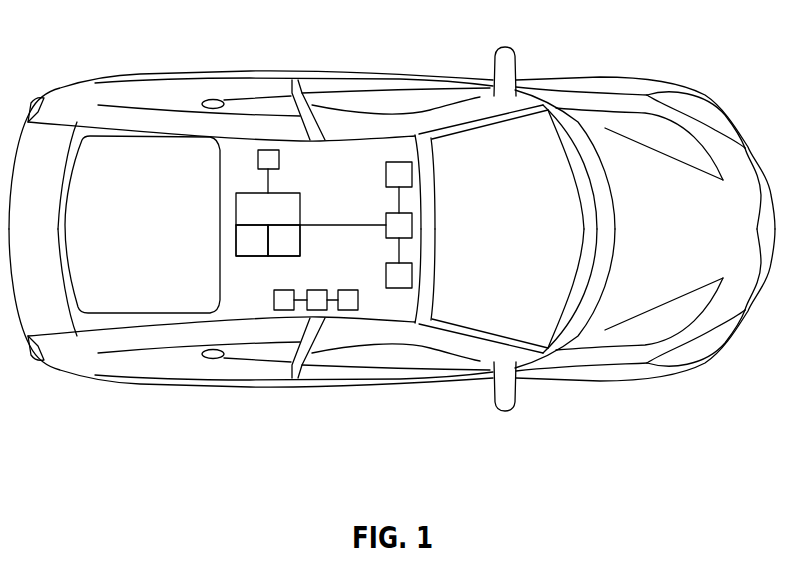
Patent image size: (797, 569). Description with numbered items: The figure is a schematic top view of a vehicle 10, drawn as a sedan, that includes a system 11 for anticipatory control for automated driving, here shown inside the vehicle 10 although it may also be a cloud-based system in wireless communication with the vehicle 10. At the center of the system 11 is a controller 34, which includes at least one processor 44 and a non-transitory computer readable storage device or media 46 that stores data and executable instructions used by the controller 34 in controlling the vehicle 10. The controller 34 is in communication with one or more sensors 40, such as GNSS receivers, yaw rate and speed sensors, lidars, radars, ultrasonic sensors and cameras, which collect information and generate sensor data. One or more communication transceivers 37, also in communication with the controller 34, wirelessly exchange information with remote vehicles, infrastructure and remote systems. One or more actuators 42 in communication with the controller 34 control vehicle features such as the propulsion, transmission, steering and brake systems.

The vehicle 10 is at (616, 84).
The system 11 is at (340, 147).
The controller 34 is at (248, 192).
The communication transceivers 37 is at (268, 150).
The sensors 40 is at (412, 175).
The actuators 42 is at (285, 310).
The processor 44 is at (252, 256).
The non-transitory computer readable storage device or media 46 is at (275, 256).